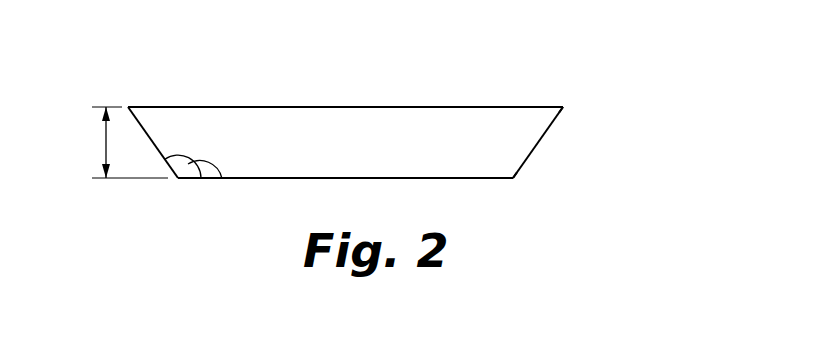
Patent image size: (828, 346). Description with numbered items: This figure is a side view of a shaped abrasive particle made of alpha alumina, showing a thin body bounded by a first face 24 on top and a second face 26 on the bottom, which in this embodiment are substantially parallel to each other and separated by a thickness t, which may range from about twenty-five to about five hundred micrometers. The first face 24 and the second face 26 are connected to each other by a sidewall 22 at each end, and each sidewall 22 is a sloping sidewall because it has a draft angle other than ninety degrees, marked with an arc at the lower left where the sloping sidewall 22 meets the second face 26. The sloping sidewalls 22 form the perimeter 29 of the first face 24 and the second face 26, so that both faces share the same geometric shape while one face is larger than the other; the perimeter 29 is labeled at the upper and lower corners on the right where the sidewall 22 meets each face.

The sidewall 22 is at (161, 155).
The first face 24 is at (463, 107).
The second face 26 is at (378, 178).
The perimeter 29 is at (563, 107).
The thickness t is at (106, 147).